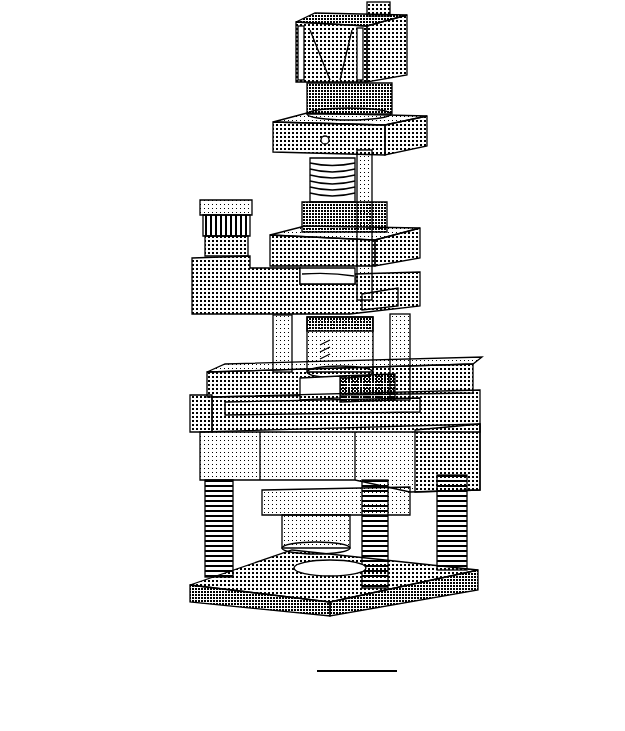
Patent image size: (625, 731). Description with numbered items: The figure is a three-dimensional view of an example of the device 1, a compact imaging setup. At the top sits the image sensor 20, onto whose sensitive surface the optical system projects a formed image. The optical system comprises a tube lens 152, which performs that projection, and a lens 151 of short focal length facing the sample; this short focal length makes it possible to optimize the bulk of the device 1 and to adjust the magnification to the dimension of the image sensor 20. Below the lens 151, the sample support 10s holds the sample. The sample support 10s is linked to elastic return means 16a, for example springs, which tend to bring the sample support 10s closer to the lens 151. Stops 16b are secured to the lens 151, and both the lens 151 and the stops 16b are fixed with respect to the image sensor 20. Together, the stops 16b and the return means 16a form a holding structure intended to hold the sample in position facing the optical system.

The device 1 is at (84, 186).
The image sensor 20 is at (292, 57).
The tube lens 152 is at (300, 178).
The lens 151 is at (305, 350).
The sample support 10s is at (193, 402).
The stops 16b is at (300, 397).
The elastic return means 16a is at (203, 540).